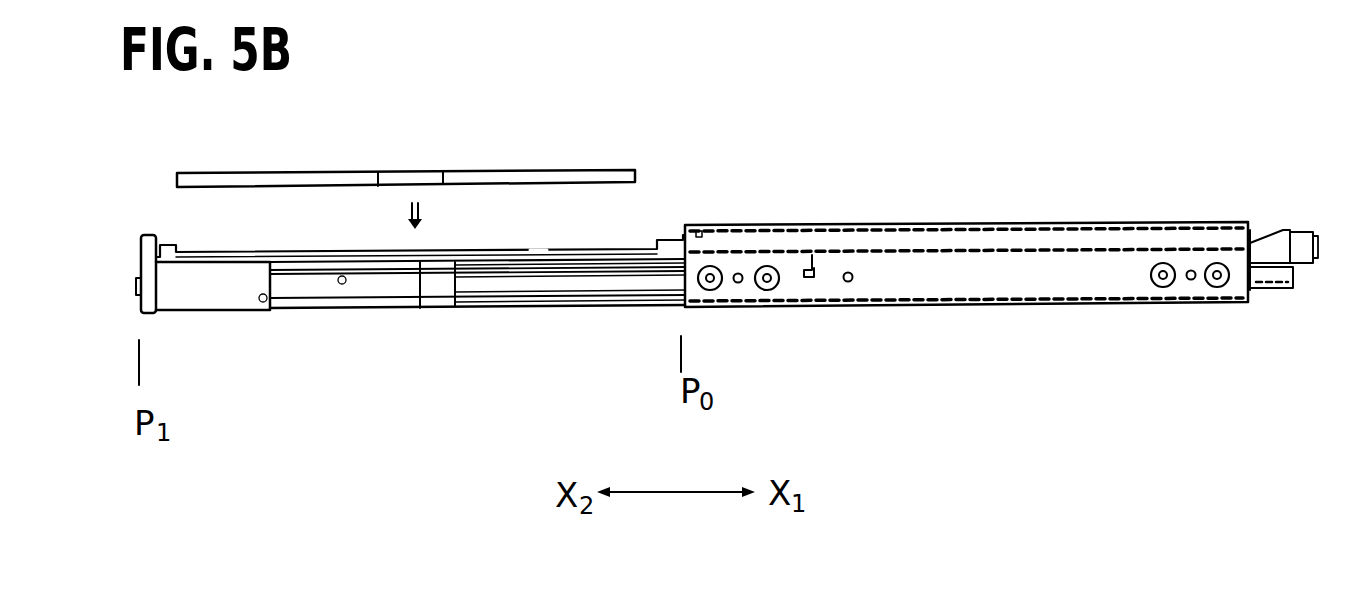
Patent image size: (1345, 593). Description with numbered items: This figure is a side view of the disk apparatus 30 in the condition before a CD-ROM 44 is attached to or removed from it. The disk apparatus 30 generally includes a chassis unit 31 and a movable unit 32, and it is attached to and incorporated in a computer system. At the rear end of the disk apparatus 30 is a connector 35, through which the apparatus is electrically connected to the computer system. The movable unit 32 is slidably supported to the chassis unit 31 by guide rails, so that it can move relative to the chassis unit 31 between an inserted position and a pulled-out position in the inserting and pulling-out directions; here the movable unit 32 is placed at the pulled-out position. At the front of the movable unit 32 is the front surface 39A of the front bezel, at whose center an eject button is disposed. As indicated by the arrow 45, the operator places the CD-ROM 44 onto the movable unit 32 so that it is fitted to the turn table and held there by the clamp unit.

The disk apparatus 30 is at (1215, 128).
The chassis unit 31 is at (1055, 316).
The movable unit 32 is at (383, 317).
The connector 35 is at (1308, 230).
The front surface 39A is at (138, 248).
The CD-ROM 44 is at (566, 169).
The arrow 45 is at (420, 213).